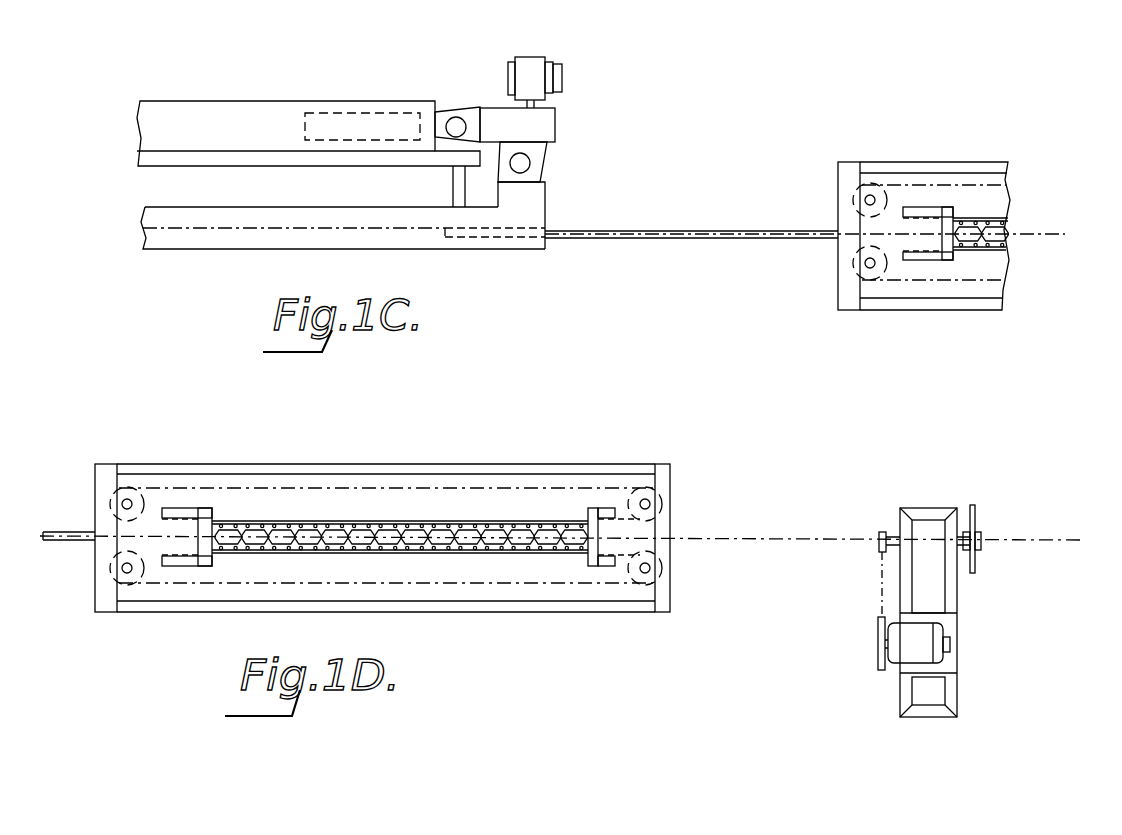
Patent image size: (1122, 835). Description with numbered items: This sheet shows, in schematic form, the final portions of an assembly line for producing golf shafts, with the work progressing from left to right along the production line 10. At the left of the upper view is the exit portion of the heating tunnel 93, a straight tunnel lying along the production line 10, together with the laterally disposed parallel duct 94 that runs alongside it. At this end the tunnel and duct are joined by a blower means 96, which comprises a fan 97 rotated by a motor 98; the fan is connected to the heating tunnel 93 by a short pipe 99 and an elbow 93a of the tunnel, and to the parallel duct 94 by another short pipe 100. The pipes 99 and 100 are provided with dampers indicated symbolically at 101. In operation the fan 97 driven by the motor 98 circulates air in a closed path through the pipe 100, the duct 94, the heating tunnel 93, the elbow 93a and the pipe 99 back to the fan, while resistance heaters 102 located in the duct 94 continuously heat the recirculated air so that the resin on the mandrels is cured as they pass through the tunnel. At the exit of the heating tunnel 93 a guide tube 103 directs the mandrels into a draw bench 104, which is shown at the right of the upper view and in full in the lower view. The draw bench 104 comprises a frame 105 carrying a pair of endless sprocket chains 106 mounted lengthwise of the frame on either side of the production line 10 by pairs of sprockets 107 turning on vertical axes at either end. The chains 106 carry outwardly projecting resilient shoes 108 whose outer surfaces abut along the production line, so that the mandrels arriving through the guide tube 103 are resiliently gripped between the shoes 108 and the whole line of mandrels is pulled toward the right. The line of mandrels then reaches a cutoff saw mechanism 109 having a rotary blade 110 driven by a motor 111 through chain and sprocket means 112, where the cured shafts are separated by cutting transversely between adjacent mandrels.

In FIG. 1C, the production line 10 is at (1028, 234).
In FIG. 1D, the production line 10 is at (752, 540).
In FIG. 1C, the heating tunnel 93 is at (215, 252).
In FIG. 1C, the elbow 93a is at (528, 210).
In FIG. 1C, the parallel duct 94 is at (175, 108).
In FIG. 1C, the blower means 96 is at (557, 113).
In FIG. 1C, the fan 97 is at (548, 130).
In FIG. 1C, the motor 98 is at (523, 66).
In FIG. 1C, the short pipe 99 is at (545, 173).
In FIG. 1C, the short pipe 100 is at (472, 107).
In FIG. 1C, the dampers 101 is at (452, 112).
In FIG. 1C, the resistance heaters 102 is at (362, 125).
In FIG. 1C, the guide tube 103 is at (757, 233).
In FIG. 1C, the draw bench 104 is at (985, 131).
In FIG. 1D, the draw bench 104 is at (400, 463).
In FIG. 1C, the frame 105 is at (887, 162).
In FIG. 1D, the frame 105 is at (614, 464).
In FIG. 1D, the endless sprocket chains 106 is at (285, 484).
In FIG. 1C, the sprockets 107 is at (870, 231).
In FIG. 1D, the sprockets 107 is at (140, 494).
In FIG. 1D, the resilient shoes 108 is at (412, 540).
In FIG. 1D, the cutoff saw mechanism 109 is at (922, 508).
In FIG. 1D, the rotary blade 110 is at (978, 523).
In FIG. 1D, the motor 111 is at (915, 637).
In FIG. 1D, the chain and sprocket means 112 is at (880, 566).